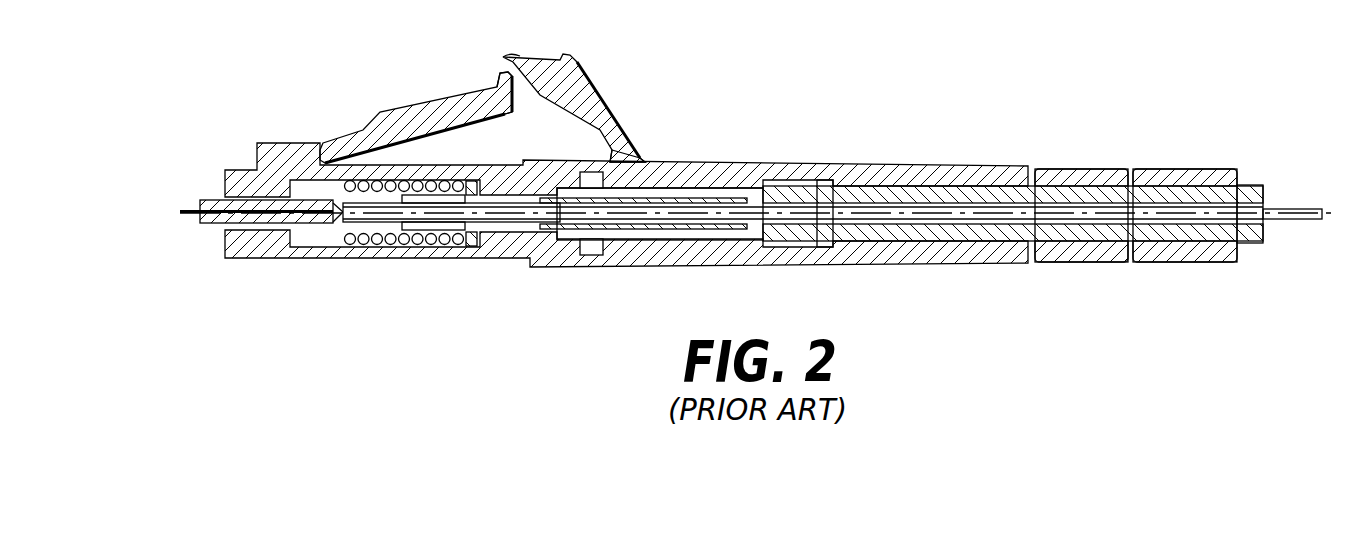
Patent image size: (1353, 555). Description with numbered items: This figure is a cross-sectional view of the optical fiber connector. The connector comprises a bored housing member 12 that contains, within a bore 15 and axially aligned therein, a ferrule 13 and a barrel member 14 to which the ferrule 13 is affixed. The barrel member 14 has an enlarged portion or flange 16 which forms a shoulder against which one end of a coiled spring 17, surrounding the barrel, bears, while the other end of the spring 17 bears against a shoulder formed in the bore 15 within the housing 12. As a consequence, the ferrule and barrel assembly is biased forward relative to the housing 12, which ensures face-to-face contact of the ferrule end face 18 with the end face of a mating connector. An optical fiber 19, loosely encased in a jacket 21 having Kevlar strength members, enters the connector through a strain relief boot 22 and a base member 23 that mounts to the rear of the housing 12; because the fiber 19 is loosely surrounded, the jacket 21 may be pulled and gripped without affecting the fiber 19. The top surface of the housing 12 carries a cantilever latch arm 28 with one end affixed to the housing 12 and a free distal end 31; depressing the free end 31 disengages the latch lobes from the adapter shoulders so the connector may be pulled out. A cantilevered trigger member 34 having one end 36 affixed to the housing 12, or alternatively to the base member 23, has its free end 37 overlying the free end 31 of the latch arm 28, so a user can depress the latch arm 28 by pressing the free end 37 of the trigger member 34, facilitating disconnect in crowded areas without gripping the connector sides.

The housing member 12 is at (327, 258).
The ferrule 13 is at (210, 200).
The barrel member 14 is at (621, 240).
The bore 15 is at (503, 235).
The flange 16 is at (328, 245).
The coiled spring 17 is at (430, 243).
The ferrule end face 18 is at (195, 213).
The optical fiber 19 is at (1303, 210).
The jacket 21 is at (1250, 186).
The strain relief boot 22 is at (1083, 168).
The base member 23 is at (733, 178).
The cantilever latch arm 28 is at (443, 93).
The free distal end 31 is at (514, 92).
The trigger member 34 is at (577, 60).
The trigger member end 36 is at (628, 152).
The trigger member free end 37 is at (510, 53).